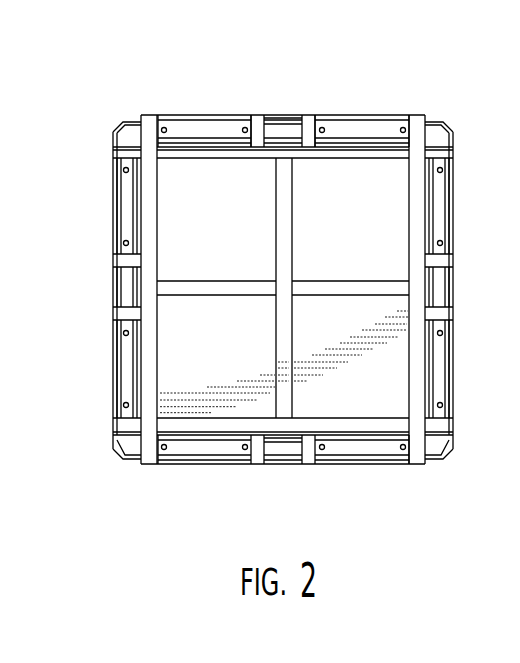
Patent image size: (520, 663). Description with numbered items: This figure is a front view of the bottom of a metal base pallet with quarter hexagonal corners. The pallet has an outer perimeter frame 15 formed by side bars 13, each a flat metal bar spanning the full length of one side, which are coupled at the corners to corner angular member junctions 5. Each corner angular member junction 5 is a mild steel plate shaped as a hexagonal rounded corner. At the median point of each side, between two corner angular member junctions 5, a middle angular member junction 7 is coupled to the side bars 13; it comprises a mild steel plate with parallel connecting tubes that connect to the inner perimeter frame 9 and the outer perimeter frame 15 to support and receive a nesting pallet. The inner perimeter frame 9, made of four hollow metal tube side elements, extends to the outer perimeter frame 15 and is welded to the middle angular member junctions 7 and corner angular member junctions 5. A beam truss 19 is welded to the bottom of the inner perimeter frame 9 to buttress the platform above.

The corner angular member junction 5 is at (256, 272).
The middle angular member junction 7 is at (282, 113).
The inner perimeter frame 9 is at (237, 113).
The side bar 13 is at (362, 109).
The outer perimeter frame 15 is at (273, 272).
The beam truss 19 is at (273, 281).